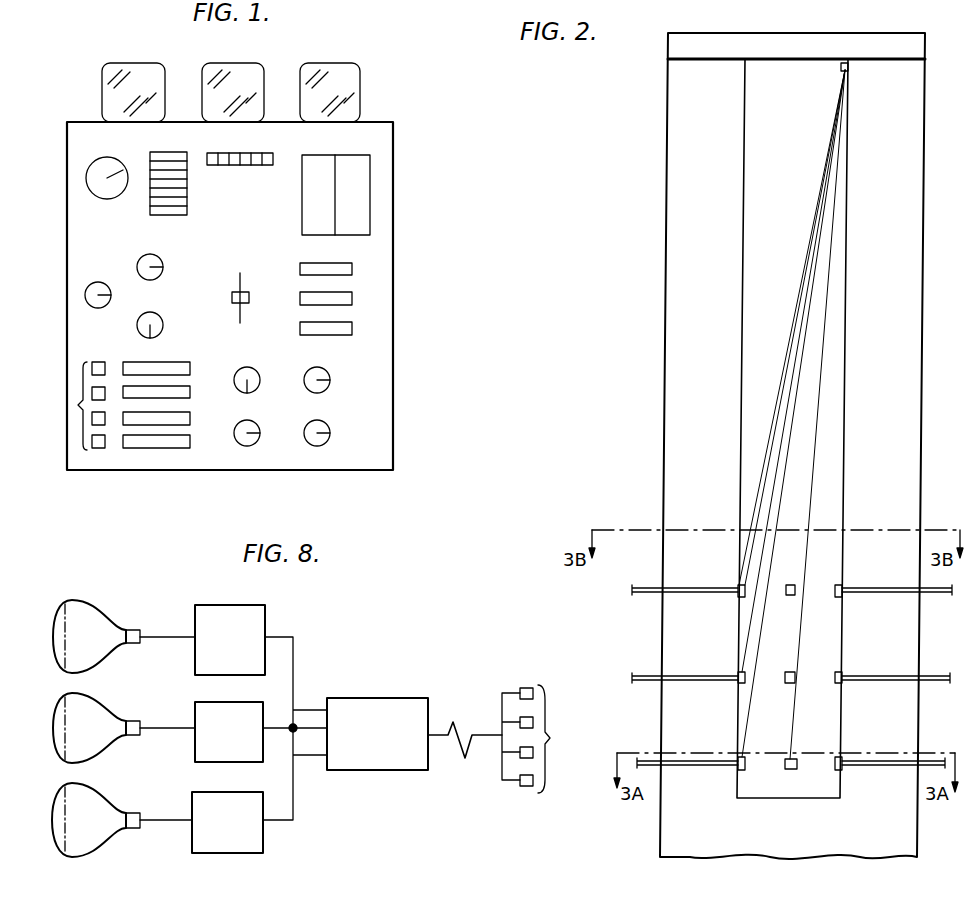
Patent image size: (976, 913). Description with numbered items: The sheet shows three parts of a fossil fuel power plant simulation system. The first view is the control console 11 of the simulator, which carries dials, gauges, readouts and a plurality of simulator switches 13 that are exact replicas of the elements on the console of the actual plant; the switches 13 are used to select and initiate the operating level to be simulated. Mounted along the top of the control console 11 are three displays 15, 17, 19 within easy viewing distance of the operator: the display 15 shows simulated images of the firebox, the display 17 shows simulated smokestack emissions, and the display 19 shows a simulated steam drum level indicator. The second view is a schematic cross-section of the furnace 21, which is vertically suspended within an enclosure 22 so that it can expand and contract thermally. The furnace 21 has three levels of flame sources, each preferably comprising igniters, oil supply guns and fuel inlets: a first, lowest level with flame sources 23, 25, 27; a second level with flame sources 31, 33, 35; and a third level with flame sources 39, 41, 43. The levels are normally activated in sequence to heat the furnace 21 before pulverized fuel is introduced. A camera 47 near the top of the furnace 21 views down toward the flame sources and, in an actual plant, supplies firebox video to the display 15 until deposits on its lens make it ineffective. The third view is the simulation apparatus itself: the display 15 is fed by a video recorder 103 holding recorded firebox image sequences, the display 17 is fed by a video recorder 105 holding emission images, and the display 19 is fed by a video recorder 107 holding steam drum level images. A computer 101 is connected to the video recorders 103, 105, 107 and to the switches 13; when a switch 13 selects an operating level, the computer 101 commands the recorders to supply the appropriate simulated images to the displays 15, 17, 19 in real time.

In FIG. 1, the control console 11 is at (393, 323).
In FIG. 1, the simulator switches 13 is at (78, 405).
In FIG. 8, the simulator switches 13 is at (538, 739).
In FIG. 1, the display 15 is at (143, 63).
In FIG. 8, the display 15 is at (93, 620).
In FIG. 1, the display 17 is at (241, 63).
In FIG. 8, the display 17 is at (112, 712).
In FIG. 1, the display 19 is at (333, 63).
In FIG. 8, the display 19 is at (105, 808).
In FIG. 2, the furnace 21 is at (745, 178).
In FIG. 2, the enclosure 22 is at (667, 288).
In FIG. 2, the flame source 23 is at (742, 772).
In FIG. 2, the flame source 25 is at (790, 770).
In FIG. 2, the flame source 27 is at (838, 770).
In FIG. 2, the flame source 31 is at (738, 680).
In FIG. 2, the flame source 33 is at (795, 680).
In FIG. 2, the flame source 35 is at (838, 683).
In FIG. 2, the flame source 39 is at (742, 597).
In FIG. 2, the flame source 41 is at (790, 595).
In FIG. 2, the flame source 43 is at (838, 597).
In FIG. 2, the camera 47 is at (848, 70).
In FIG. 8, the computer 101 is at (385, 698).
In FIG. 8, the video recorder 103 is at (265, 620).
In FIG. 8, the video recorder 105 is at (263, 707).
In FIG. 8, the video recorder 107 is at (240, 853).